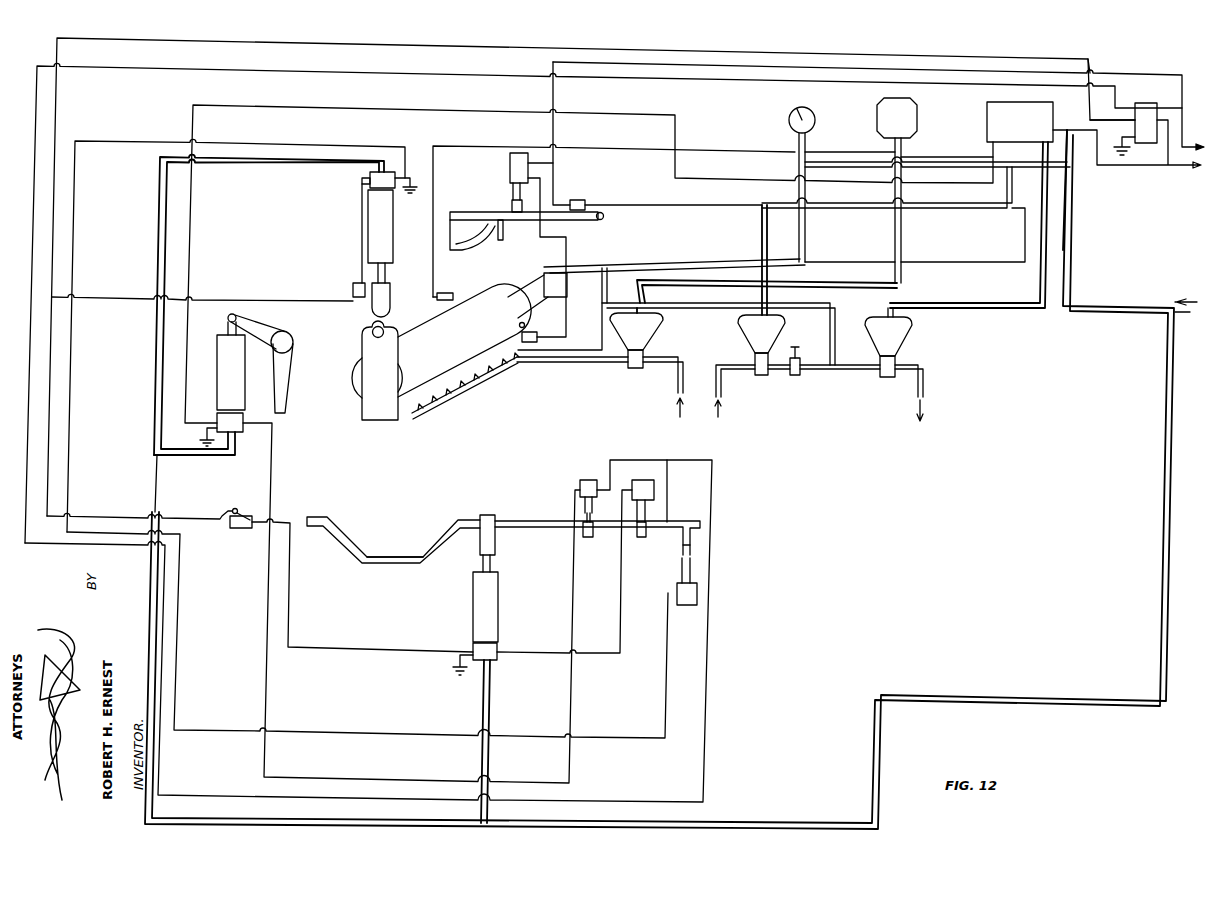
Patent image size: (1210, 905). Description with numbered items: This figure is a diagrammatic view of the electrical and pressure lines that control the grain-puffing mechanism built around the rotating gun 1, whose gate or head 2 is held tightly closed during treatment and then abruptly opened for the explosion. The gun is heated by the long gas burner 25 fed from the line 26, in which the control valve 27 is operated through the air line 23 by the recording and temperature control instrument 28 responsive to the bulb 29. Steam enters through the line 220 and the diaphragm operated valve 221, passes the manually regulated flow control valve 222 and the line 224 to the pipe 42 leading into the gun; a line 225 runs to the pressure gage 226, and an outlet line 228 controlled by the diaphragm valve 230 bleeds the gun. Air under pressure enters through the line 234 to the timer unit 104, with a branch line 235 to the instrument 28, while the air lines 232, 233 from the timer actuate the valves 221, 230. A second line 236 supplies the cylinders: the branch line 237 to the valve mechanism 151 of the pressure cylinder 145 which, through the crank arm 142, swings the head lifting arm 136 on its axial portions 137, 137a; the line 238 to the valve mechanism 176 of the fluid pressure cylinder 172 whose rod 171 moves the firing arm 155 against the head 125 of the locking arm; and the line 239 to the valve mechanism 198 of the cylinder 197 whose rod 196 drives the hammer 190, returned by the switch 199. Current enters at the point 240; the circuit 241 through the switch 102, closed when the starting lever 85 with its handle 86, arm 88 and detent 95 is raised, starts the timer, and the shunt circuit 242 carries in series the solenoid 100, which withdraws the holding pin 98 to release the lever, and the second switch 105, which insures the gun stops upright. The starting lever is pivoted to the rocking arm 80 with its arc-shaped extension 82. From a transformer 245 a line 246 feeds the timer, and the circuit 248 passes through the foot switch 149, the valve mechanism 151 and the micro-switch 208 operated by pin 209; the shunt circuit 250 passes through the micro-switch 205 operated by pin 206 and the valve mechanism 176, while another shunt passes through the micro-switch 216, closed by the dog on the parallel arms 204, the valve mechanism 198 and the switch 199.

The rotating gun 1 is at (496, 296).
The gate or head 2 is at (360, 352).
The air line 23 is at (828, 288).
The gas burner 25 is at (474, 398).
The burner supply line 26 is at (612, 368).
The control valve 27 is at (650, 340).
The recording and temperature control instrument 28 is at (918, 126).
The bulb 29 is at (444, 292).
The pipe 42 is at (524, 278).
The rocking arm 80 is at (446, 222).
The arc-shaped extension 82 is at (475, 250).
The starting lever 85 is at (462, 205).
The operating handle 86 is at (604, 217).
The downwardly extending arm 88 is at (503, 230).
The lug or detent 95 is at (511, 207).
The holding pin or catch 98 is at (512, 190).
The solenoid 100 is at (509, 160).
The switch 102 is at (576, 199).
The timer unit 104 is at (1036, 106).
The second switch 105 is at (533, 336).
The head or nut on locking arm 125 is at (384, 328).
The head lifting arm 136 is at (390, 556).
The axial portion of head lifting arm 137 is at (468, 518).
The axial portion of head lifting arm 137a is at (316, 516).
The crank arm 142 is at (490, 514).
The pressure cylinder 145 is at (499, 622).
The switch 149 is at (258, 510).
The valve mechanism 151 is at (498, 658).
The firing arm 155 is at (285, 388).
The rod 171 is at (228, 320).
The fluid pressure cylinder 172 is at (219, 361).
The valve mechanism 176 is at (244, 436).
The hammer or driver 190 is at (390, 294).
The rod 196 is at (386, 278).
The fluid pressure cylinder 197 is at (393, 240).
The valve mechanism 198 is at (362, 181).
The switch 199 is at (352, 290).
The parallel arms 204 is at (694, 543).
The micro-switch 205 is at (590, 478).
The pin 206 is at (595, 538).
The micro-switch 208 is at (655, 497).
The pin 209 is at (645, 537).
The micro-switch 216 is at (678, 585).
The steam line 220 is at (714, 366).
The diaphragm operated valve 221 is at (775, 336).
The flow control valve 222 is at (796, 376).
The line 224 is at (744, 312).
The line 225 is at (801, 238).
The pressure gage 226 is at (815, 116).
The outlet line 228 is at (928, 375).
The diaphragm valve 230 is at (908, 335).
The air line 232 is at (962, 213).
The air line 233 is at (1020, 307).
The air supply line 234 is at (1073, 240).
The branch line 235 is at (978, 165).
The air line 236 is at (1168, 360).
The branch line 237 is at (489, 763).
The line 238 is at (204, 456).
The line 239 is at (318, 172).
The electric supply point 240 is at (1196, 166).
The circuit 241 is at (1120, 75).
The shunt circuit 242 is at (569, 250).
The transformer 245 is at (1165, 95).
The line 246 is at (1100, 120).
The circuit 248 is at (492, 48).
The shunt circuit 250 is at (193, 280).